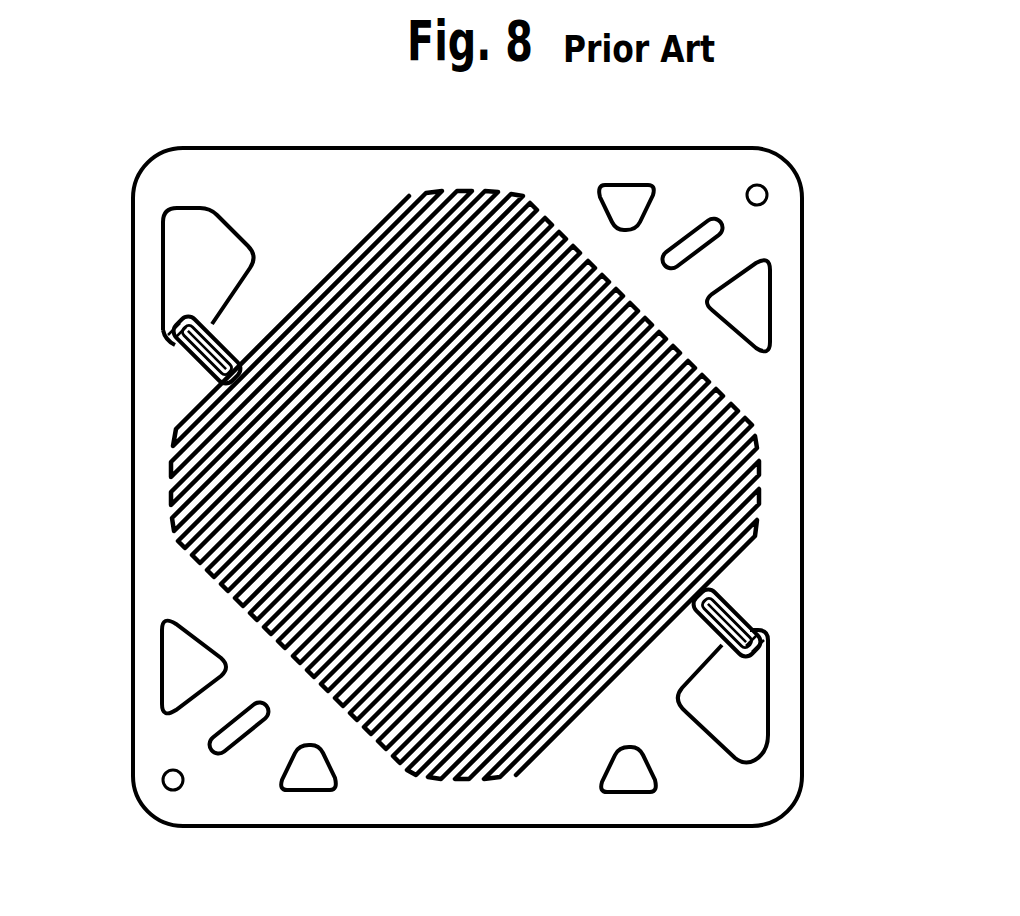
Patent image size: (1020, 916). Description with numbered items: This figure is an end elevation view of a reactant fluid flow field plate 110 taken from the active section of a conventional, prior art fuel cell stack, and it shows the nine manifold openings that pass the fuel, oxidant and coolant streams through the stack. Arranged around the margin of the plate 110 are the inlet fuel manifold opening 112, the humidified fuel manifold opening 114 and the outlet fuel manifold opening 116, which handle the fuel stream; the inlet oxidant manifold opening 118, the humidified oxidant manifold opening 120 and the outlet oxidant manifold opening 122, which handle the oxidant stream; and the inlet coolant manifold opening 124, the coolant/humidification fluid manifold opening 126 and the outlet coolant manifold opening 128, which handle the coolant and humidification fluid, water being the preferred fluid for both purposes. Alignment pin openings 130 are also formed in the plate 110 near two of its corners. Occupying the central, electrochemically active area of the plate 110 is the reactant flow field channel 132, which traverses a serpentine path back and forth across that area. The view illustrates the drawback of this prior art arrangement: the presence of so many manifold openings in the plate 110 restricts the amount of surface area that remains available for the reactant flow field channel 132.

The reactant fluid flow field plate 110 is at (780, 378).
The inlet fuel manifold opening 112 is at (304, 768).
The humidified fuel manifold opening 114 is at (760, 308).
The outlet fuel manifold opening 116 is at (176, 670).
The inlet oxidant manifold opening 118 is at (626, 780).
The humidified oxidant manifold opening 120 is at (196, 240).
The outlet oxidant manifold opening 122 is at (750, 704).
The inlet coolant manifold opening 124 is at (636, 203).
The coolant/humidification fluid manifold opening 126 is at (244, 741).
The outlet coolant manifold opening 128 is at (712, 232).
The alignment pin openings 130 is at (762, 200).
The reactant flow field channel 132 is at (758, 515).